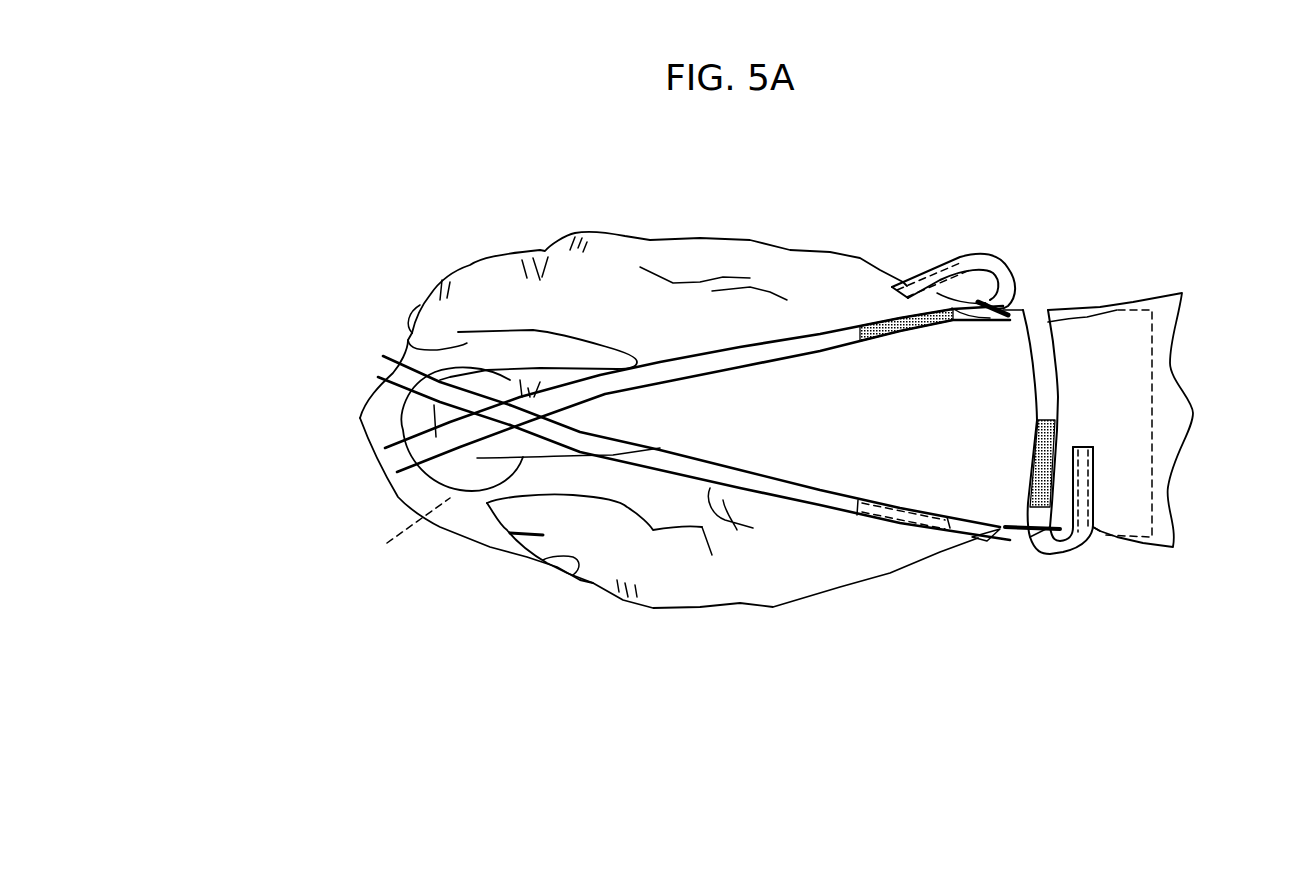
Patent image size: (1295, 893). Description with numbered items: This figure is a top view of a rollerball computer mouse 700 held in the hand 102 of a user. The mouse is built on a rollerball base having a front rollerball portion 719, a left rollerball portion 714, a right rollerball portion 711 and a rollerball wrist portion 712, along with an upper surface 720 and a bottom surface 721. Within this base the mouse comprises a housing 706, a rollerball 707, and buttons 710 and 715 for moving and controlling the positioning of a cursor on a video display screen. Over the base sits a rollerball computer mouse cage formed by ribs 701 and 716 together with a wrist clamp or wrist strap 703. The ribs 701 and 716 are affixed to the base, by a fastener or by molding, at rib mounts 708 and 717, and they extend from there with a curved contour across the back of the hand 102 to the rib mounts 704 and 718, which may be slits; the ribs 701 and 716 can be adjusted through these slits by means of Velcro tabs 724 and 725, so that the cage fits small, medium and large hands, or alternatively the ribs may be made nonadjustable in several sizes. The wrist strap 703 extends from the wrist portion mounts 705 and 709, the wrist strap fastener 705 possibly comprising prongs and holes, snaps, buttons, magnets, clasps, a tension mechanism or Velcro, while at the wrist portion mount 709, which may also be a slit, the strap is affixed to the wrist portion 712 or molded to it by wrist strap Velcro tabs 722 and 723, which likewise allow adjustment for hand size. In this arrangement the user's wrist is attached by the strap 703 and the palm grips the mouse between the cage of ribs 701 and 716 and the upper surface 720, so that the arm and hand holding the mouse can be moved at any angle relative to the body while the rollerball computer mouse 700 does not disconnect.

The rollerball computer mouse 700 is at (466, 216).
The rib 701 is at (777, 486).
The wrist clamp or wrist strap 703 is at (1053, 399).
The rib mount 704 is at (983, 302).
The wrist portion mount 705 is at (1032, 310).
The housing 706 is at (472, 503).
The rollerball 707 is at (419, 409).
The rib mount 708 is at (397, 468).
The wrist portion mount 709 is at (1038, 548).
The button 710 is at (527, 507).
The right rollerball portion 711 is at (698, 237).
The rollerball wrist portion 712 is at (1098, 538).
The left rollerball portion 714 is at (584, 583).
The button 715 is at (532, 542).
The rib 716 is at (715, 360).
The rib mount 717 is at (403, 360).
The rib mount 718 is at (978, 540).
The front rollerball portion 719 is at (360, 418).
The upper surface 720 is at (597, 473).
The bottom surface 721 is at (397, 531).
The wrist strap Velcro tab 722 is at (1088, 437).
The wrist strap Velcro tab 723 is at (1038, 432).
The Velcro tab 724 is at (890, 510).
The Velcro tab 725 is at (880, 320).
The hand 102 is at (968, 447).